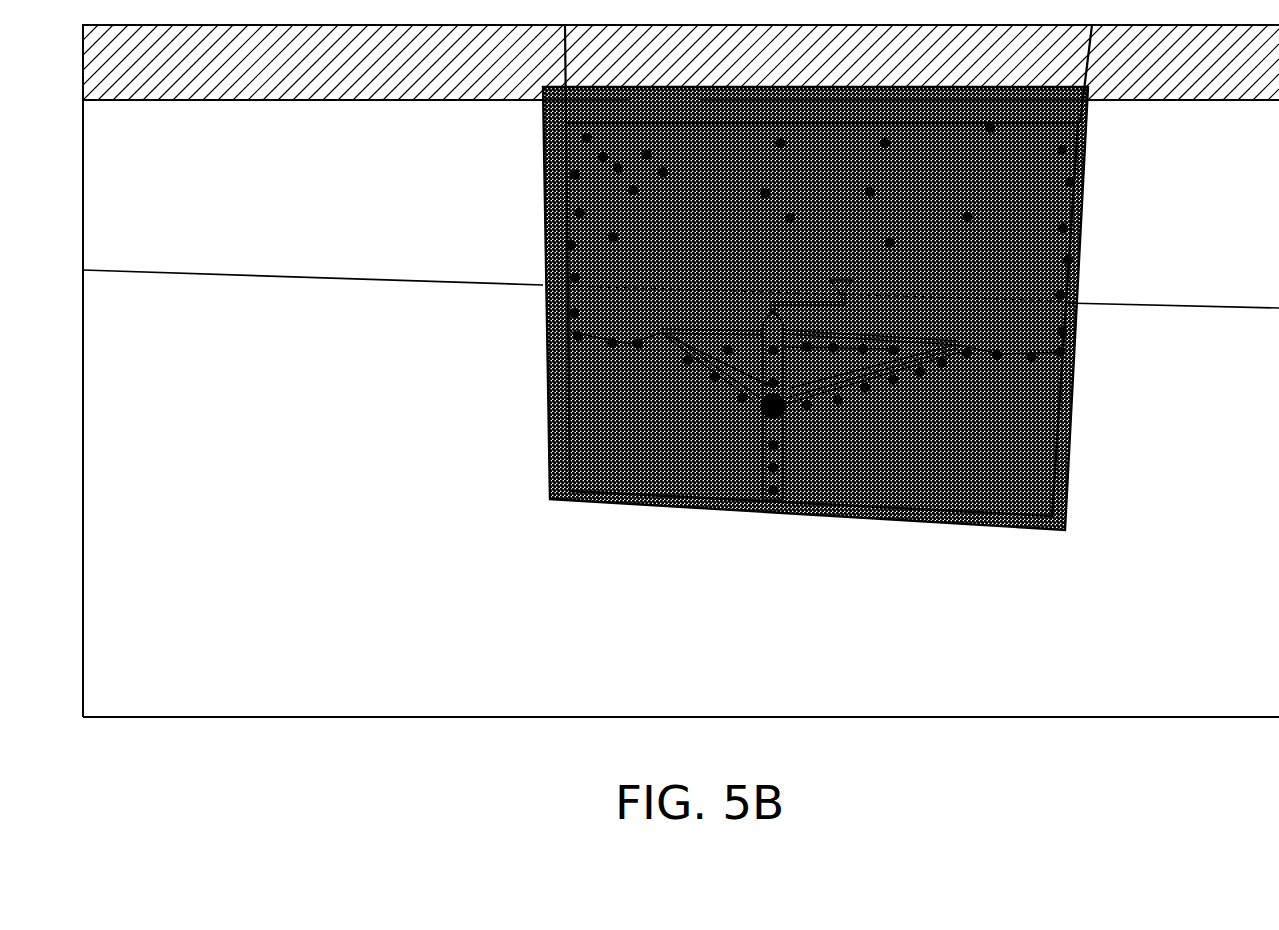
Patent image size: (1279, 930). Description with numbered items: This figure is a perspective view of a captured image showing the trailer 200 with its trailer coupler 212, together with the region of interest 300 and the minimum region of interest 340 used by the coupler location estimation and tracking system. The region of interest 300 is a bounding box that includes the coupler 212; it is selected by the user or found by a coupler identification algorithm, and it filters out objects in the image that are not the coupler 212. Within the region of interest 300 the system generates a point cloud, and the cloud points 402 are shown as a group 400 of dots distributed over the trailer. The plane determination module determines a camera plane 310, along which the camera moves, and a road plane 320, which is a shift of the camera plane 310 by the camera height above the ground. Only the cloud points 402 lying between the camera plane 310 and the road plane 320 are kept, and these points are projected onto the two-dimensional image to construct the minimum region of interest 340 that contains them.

The camera plane 310 is at (276, 68).
The road plane 320 is at (294, 559).
The trailer 200 is at (684, 113).
The trailer coupler 212 is at (790, 409).
The region of interest 300 is at (1072, 410).
The minimum region of interest 340 is at (1067, 372).
The sensor array 400 is at (1217, 143).
The cloud points 402 is at (1083, 207).